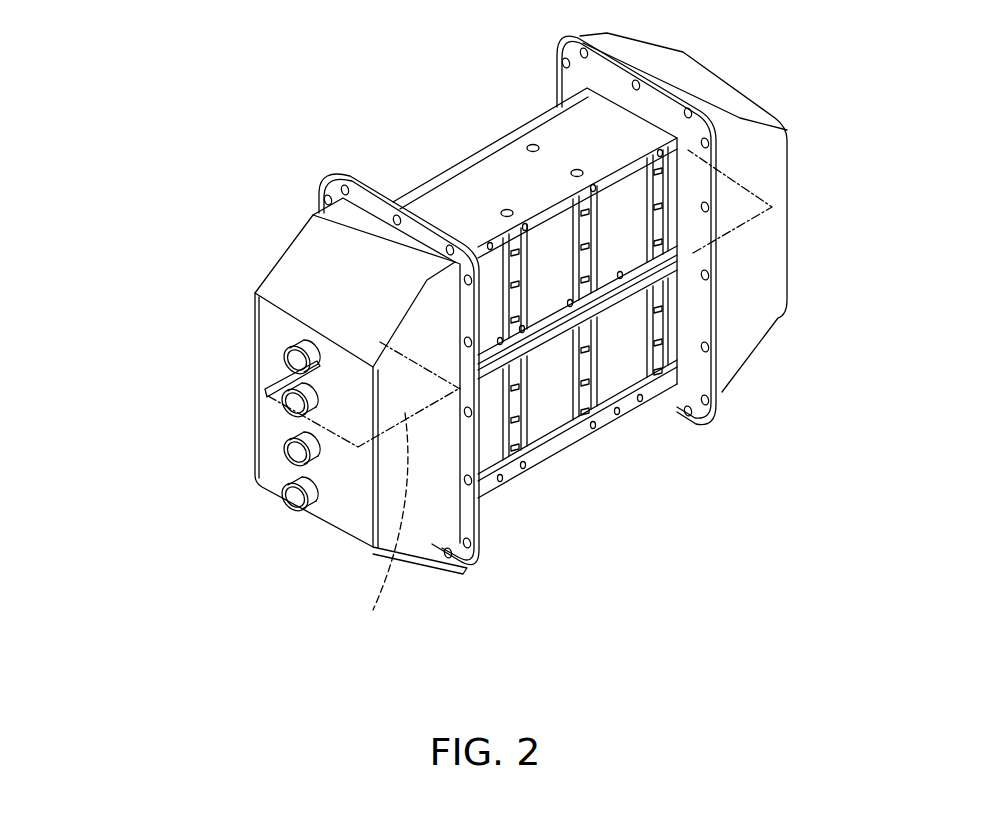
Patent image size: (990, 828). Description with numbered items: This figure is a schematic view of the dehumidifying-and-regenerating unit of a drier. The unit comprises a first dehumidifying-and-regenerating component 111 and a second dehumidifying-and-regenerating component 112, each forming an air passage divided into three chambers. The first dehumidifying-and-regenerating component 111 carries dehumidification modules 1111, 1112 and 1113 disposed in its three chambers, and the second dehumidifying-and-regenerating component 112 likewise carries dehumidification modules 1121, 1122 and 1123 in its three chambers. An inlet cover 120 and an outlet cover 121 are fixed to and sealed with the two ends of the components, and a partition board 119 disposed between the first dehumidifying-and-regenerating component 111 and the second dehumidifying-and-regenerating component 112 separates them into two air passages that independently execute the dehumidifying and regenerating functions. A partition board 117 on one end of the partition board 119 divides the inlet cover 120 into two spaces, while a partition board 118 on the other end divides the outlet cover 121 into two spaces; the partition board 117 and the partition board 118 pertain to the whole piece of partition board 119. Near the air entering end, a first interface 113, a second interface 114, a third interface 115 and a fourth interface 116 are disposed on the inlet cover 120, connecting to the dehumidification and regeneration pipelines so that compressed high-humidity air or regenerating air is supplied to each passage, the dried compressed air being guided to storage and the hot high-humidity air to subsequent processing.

The first dehumidifying-and-regenerating component 111 is at (520, 205).
The dehumidification module 1111 is at (622, 183).
The dehumidification module 1112 is at (547, 227).
The dehumidification module 1113 is at (489, 262).
The second dehumidifying-and-regenerating component 112 is at (600, 347).
The dehumidification module 1121 is at (490, 458).
The dehumidification module 1122 is at (546, 425).
The dehumidification module 1123 is at (660, 307).
The first interface 113 is at (296, 361).
The second interface 114 is at (294, 404).
The third interface 115 is at (296, 453).
The fourth interface 116 is at (294, 499).
The partition board 117 is at (380, 525).
The partition board 118 is at (777, 202).
The partition board 119 is at (720, 310).
The inlet cover 120 is at (345, 520).
The outlet cover 121 is at (773, 162).